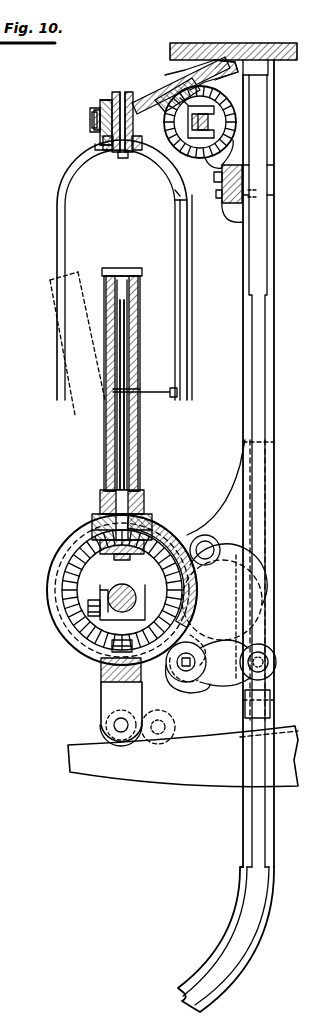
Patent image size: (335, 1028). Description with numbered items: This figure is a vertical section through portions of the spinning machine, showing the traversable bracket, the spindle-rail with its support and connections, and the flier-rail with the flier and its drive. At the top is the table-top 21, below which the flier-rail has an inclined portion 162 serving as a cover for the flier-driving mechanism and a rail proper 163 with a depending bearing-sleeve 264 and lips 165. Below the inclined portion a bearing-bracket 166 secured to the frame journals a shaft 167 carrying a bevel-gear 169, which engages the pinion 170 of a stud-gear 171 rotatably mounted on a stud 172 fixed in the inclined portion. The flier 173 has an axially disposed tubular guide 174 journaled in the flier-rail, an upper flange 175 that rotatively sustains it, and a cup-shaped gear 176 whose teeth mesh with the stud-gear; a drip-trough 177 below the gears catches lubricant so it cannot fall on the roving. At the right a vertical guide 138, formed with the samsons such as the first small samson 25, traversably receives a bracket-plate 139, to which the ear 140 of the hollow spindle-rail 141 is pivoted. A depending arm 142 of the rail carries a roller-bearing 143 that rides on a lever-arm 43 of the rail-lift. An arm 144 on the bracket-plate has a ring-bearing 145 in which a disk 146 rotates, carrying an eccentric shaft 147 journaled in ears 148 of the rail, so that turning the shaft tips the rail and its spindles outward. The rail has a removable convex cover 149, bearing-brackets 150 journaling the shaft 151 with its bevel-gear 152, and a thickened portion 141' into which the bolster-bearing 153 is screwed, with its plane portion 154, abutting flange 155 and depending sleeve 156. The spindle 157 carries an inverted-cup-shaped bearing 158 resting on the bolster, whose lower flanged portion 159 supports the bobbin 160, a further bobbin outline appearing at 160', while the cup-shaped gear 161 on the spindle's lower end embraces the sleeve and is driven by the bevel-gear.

The table-top 21 is at (292, 43).
The first small samson 25 is at (250, 962).
The lever-arms 43 is at (183, 756).
The vertical guides 138 is at (274, 395).
The bracket-plates 139 is at (265, 598).
The ears 140 is at (212, 530).
The hollow spindle-rail 141 is at (224, 612).
The thickened portion 141' is at (162, 558).
The depending arms 142 is at (100, 702).
The roller-bearings 143 is at (100, 730).
The arm 144 is at (276, 664).
The ring-bearing 145 is at (190, 684).
The disk 146 is at (215, 686).
The shaft 147 is at (198, 630).
The ears 148 is at (178, 672).
The removable convex covers 149 is at (50, 598).
The bearing-brackets 150 is at (100, 664).
The shaft 151 is at (110, 648).
The bevel-gears 152 is at (88, 608).
The bolster-bearings 153 is at (92, 524).
The plane portion 154 is at (100, 495).
The abutting flange 155 is at (92, 534).
The sleeve 156 is at (100, 548).
The spindle 157 is at (140, 425).
The inverted-cup-shaped bearing 158 is at (138, 482).
The lower flanged portion 159 is at (102, 512).
The bobbin 160 is at (145, 375).
The cross bar (alternate position) 160' is at (68, 346).
The cup-shaped gear 161 is at (100, 548).
The inclined portions 162 is at (175, 66).
The flier-rail proper 163 is at (103, 100).
The lips 165 is at (92, 122).
The bearing-brackets 166 is at (240, 158).
The shafts 167 is at (214, 122).
The bevel-gears 169 is at (236, 104).
The pinions 170 is at (200, 70).
The stud-gear 171 is at (228, 62).
The studs 172 is at (180, 90).
The flier 173 is at (63, 238).
The tubular guide 174 is at (126, 158).
The upper flange 175 is at (115, 92).
The cup-shaped gear 176 is at (104, 140).
The drip-trough 177 is at (100, 152).
The plate 264 is at (92, 110).